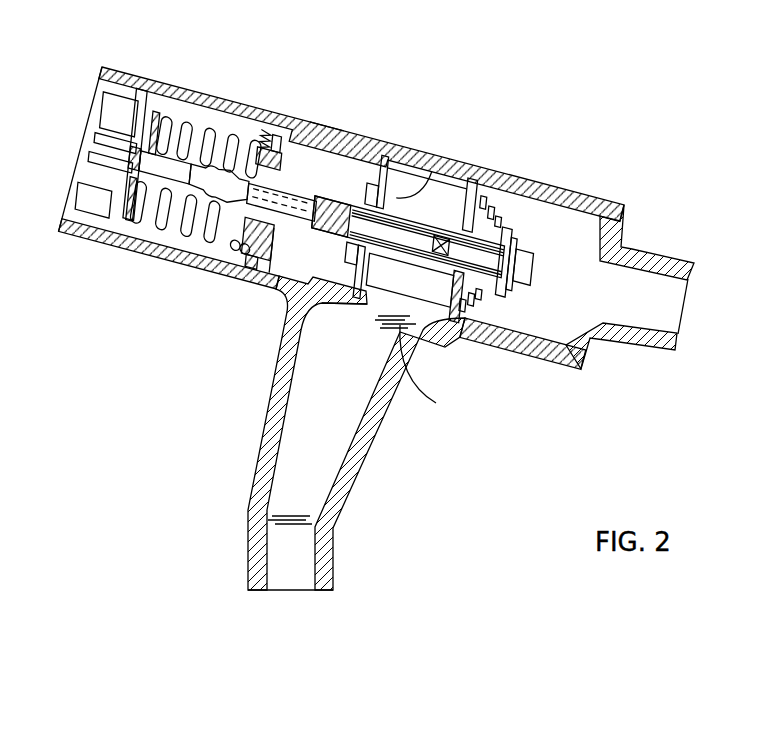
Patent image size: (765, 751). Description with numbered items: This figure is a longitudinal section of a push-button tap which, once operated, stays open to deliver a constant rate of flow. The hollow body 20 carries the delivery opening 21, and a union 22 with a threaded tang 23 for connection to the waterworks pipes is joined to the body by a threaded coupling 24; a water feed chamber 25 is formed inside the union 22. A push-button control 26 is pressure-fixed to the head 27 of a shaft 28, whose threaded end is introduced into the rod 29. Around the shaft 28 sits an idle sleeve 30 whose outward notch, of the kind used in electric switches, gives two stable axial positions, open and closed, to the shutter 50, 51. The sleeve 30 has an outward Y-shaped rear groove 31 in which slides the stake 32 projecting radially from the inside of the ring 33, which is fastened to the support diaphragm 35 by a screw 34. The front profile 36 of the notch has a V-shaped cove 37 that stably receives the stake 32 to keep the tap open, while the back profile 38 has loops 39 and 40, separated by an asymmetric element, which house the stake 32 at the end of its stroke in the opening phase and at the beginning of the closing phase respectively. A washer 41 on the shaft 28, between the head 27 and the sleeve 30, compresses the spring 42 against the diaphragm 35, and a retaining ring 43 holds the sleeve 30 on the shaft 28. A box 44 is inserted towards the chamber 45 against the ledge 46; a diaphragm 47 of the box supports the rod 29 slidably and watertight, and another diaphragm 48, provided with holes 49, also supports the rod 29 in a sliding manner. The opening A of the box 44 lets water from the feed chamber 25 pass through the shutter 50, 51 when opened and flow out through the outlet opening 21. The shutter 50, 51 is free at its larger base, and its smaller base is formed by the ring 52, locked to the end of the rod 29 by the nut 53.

The hollow body 20 is at (360, 162).
The delivery opening 21 is at (250, 563).
The union 22 is at (552, 358).
The threaded tang 23 is at (678, 265).
The threaded coupling 24 is at (498, 180).
The water feed chamber 25 is at (584, 240).
The push-button control 26 is at (93, 98).
The head 27 is at (147, 108).
The shaft 28 is at (146, 228).
The rod 29 is at (432, 155).
The idle sleeve 30 is at (224, 238).
The Y-shaped rear groove 31 is at (289, 255).
The stake 32 is at (327, 122).
The ring 33 is at (258, 272).
The screw 34 is at (305, 150).
The support diaphragm 35 is at (271, 120).
The front profile 36 is at (207, 232).
The V-shaped cove 37 is at (238, 120).
The back profile 38 is at (184, 228).
The loop 39 is at (173, 118).
The loop 40 is at (202, 122).
The washer 41 is at (119, 215).
The spring 42 is at (241, 125).
The retaining ring 43 is at (323, 307).
The box 44 is at (462, 185).
The chamber 45 is at (372, 162).
The ledge 46 is at (371, 300).
The plunger 47 is at (417, 235).
The diaphragm 48 is at (447, 283).
The holes 49 is at (460, 196).
The shutter 50 is at (533, 195).
The shutter 51 is at (483, 300).
The ring 52 is at (551, 225).
The nut 53 is at (513, 298).
The opening of the box A is at (426, 371).